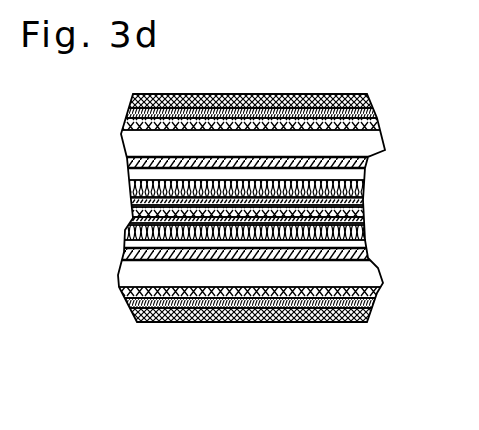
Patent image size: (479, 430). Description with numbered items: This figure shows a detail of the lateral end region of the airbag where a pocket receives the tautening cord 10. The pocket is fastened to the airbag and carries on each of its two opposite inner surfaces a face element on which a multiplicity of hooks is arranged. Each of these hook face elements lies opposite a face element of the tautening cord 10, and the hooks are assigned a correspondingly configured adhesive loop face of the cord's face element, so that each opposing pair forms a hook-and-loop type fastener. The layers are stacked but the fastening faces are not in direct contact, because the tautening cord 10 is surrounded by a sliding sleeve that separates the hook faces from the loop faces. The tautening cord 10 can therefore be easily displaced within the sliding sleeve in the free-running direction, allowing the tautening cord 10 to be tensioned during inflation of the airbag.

The tautening cord 10 is at (252, 188).